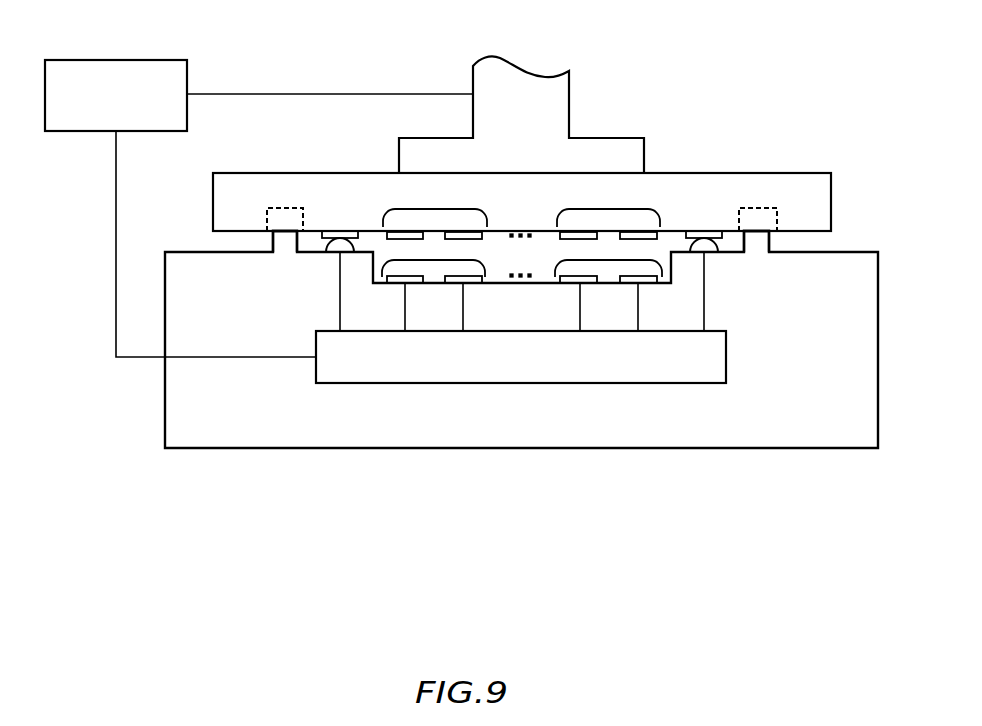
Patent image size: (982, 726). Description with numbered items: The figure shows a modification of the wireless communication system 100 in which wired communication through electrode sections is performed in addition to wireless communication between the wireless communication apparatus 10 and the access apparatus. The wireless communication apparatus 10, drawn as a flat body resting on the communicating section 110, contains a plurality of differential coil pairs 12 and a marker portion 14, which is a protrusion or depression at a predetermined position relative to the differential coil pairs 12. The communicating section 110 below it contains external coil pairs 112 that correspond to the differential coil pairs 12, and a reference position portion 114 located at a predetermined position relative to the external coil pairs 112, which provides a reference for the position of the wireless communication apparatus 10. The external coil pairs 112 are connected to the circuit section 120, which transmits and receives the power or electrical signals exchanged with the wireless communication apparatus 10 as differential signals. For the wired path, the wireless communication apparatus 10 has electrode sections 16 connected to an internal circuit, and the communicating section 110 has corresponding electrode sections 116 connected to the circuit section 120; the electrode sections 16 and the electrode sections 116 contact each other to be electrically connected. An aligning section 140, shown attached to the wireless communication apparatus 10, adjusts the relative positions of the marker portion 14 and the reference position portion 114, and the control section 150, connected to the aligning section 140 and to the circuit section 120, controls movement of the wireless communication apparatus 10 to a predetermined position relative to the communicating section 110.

The wireless communication system 100 is at (480, 591).
The control section 150 is at (116, 60).
The communicating section 110 is at (726, 449).
The circuit section 120 is at (726, 358).
The wireless communication apparatus 10 is at (797, 173).
The aligning section 140 is at (570, 103).
The marker portion 14 is at (285, 207).
The electrode sections 16 is at (340, 231).
The electrode sections 116 is at (333, 254).
The reference position portion 114 is at (286, 240).
The differential coil pairs 12 is at (434, 208).
The external coil pairs 112 is at (437, 260).